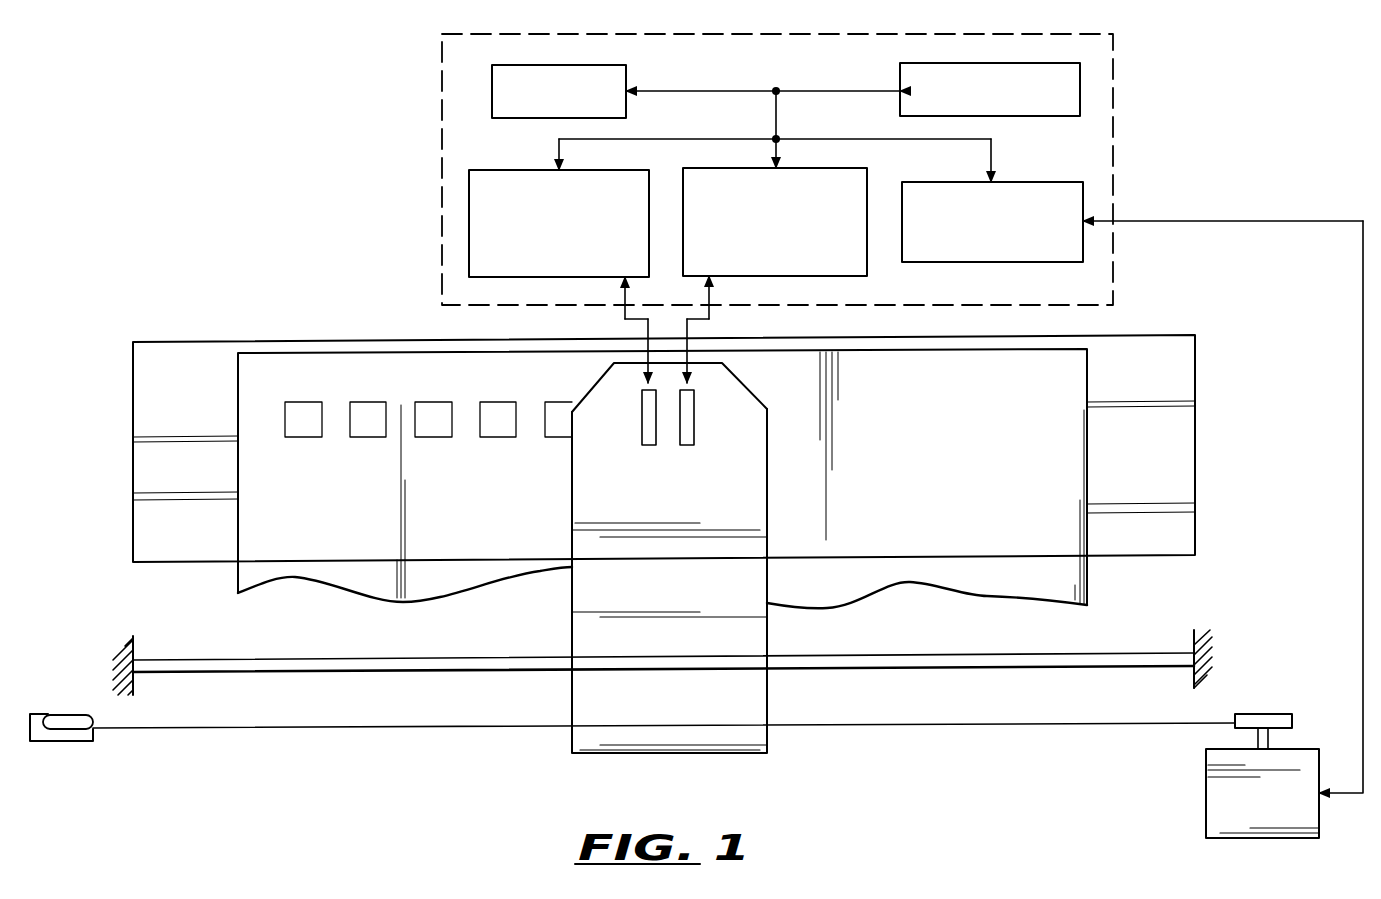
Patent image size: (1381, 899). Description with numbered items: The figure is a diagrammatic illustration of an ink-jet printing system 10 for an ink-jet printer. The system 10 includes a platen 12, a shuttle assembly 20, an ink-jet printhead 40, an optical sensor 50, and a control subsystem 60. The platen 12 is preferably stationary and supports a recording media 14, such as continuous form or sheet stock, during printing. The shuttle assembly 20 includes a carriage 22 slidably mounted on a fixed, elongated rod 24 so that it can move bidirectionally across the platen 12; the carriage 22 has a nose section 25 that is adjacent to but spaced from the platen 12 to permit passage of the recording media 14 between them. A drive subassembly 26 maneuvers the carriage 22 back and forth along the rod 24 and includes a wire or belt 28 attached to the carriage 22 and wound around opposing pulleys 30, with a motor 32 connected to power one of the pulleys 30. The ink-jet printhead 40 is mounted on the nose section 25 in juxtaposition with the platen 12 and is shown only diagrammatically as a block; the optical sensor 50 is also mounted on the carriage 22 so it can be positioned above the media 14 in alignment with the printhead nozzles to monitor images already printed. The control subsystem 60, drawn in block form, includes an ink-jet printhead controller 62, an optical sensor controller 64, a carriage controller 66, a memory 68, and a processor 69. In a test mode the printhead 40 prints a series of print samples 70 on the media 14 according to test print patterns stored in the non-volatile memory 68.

The ink-jet printing system 10 is at (219, 260).
The platen 12 is at (1167, 473).
The recording media 14 is at (1090, 583).
The shuttle assembly 20 is at (565, 787).
The carriage 22 is at (750, 755).
The rod 24 is at (968, 667).
The nose section 25 is at (740, 398).
The drive subassembly 26 is at (1252, 688).
The belt 28 is at (1010, 725).
The pulleys 30 is at (68, 745).
The motor 32 is at (1206, 807).
The ink-jet printhead 40 is at (649, 446).
The optical sensor 50 is at (696, 418).
The control subsystem 60 is at (1113, 150).
The ink-jet printhead controller 62 is at (469, 228).
The optical sensor controller 64 is at (867, 182).
The carriage controller 66 is at (1083, 245).
The memory 68 is at (492, 91).
The processor 69 is at (1080, 88).
The print samples 70 is at (378, 437).